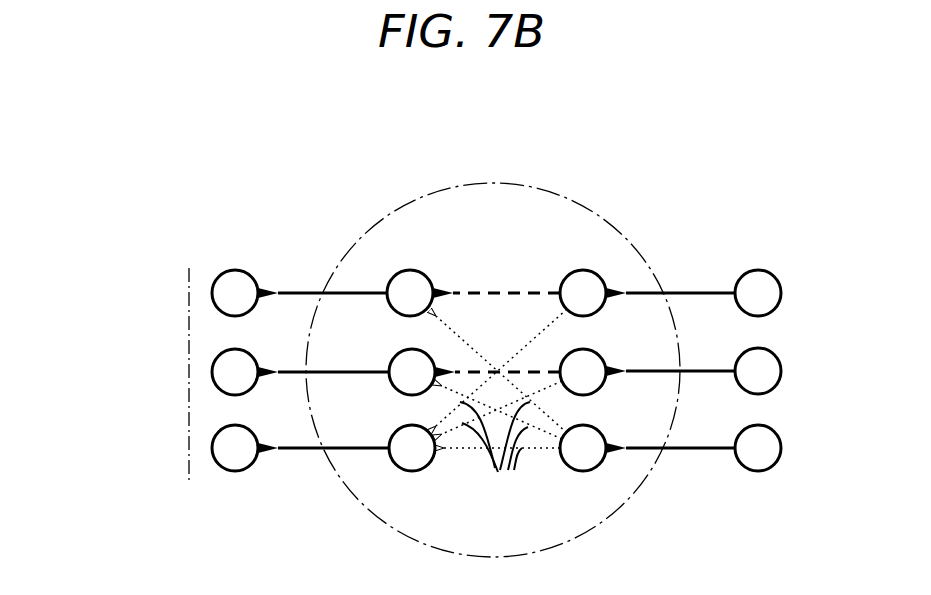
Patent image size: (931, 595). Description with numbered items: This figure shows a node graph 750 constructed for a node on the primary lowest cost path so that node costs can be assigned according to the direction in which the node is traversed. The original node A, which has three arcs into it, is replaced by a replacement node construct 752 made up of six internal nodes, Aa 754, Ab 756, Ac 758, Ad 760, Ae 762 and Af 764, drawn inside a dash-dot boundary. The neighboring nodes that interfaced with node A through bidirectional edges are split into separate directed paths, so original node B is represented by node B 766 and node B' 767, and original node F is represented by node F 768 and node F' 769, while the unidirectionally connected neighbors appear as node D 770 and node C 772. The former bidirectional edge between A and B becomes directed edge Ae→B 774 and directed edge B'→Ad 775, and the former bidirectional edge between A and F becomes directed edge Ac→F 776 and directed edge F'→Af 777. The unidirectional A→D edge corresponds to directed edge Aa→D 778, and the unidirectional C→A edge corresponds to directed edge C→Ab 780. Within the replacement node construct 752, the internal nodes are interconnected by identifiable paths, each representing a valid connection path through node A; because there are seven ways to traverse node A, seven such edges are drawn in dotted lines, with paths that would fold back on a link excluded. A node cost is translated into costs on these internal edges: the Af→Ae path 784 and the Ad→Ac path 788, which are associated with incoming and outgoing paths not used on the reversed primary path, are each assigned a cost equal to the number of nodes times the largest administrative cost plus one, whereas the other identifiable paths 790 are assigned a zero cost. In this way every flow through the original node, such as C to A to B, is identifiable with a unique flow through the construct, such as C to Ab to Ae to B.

The node graph 750 is at (626, 209).
The replacement node construct 752 is at (403, 207).
The internal node Aa 754 is at (397, 465).
The internal node Ab 756 is at (599, 465).
The internal node Ac 758 is at (397, 389).
The internal node Ad 760 is at (599, 389).
The internal node Ae 762 is at (395, 310).
The internal node Af 764 is at (599, 311).
The node B 766 is at (212, 293).
The node B' 767 is at (781, 371).
The node F 768 is at (212, 372).
The node F' 769 is at (781, 293).
The node D 770 is at (212, 448).
The node C 772 is at (781, 448).
The directed edge Ae→B 774 is at (318, 296).
The directed edge B'→Ad 775 is at (672, 375).
The directed edge Ac→F 776 is at (318, 374).
The directed edge F'→Af 777 is at (672, 296).
The directed edge Aa→D 778 is at (318, 451).
The directed edge C→Ab 780 is at (670, 451).
The Af→Ae path 784 is at (496, 290).
The Ad→Ac path 788 is at (470, 370).
The zero-cost identifiable paths 790 is at (495, 454).